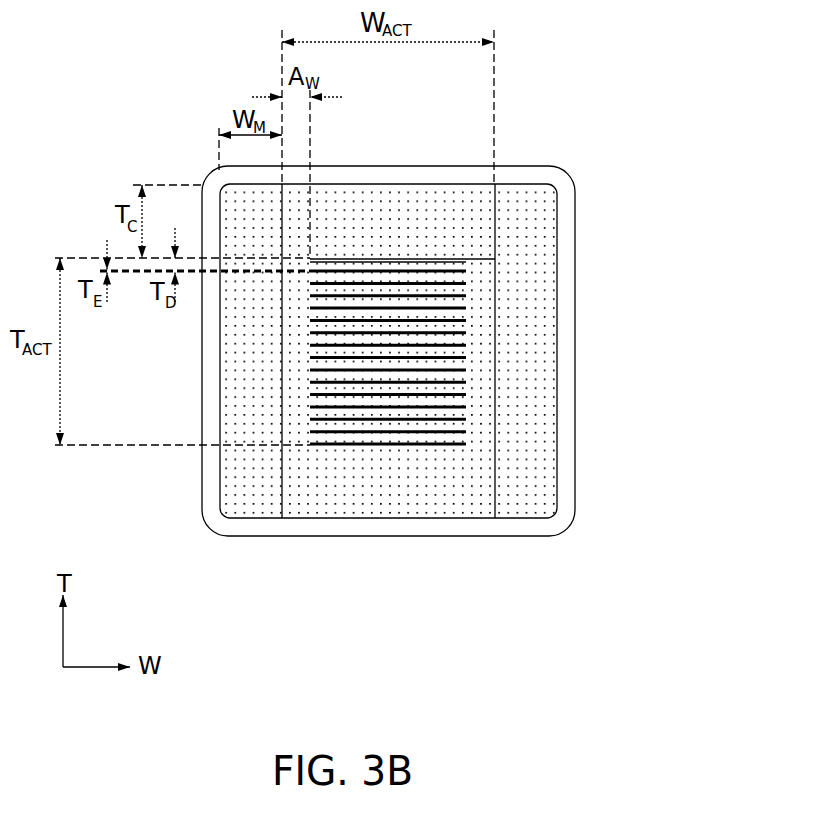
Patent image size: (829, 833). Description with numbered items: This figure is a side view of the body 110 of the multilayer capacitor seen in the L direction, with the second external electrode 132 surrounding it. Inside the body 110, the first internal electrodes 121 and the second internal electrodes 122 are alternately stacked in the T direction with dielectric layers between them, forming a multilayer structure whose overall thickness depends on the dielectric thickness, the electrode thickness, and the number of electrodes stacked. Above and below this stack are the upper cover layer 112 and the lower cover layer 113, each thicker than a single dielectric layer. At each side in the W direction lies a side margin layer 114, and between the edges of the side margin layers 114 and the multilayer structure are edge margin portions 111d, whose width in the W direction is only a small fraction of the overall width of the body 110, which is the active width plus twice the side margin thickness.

The body 110 is at (518, 184).
The edge margin portion 111d is at (297, 419).
The upper cover layer 112 is at (455, 197).
The lower cover layer 113 is at (420, 489).
The side margin layer 114 is at (537, 290).
The first internal electrode 121 is at (363, 260).
The second internal electrode 122 is at (385, 270).
The second external electrode 132 is at (568, 200).